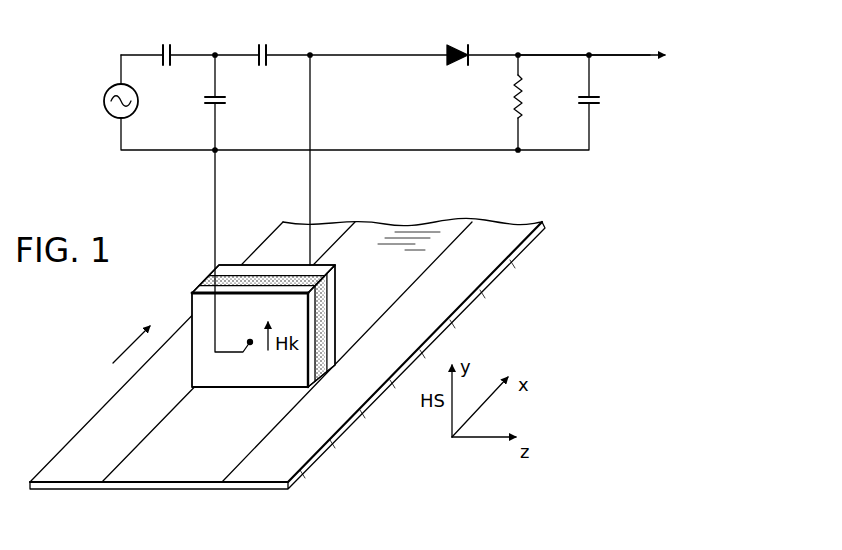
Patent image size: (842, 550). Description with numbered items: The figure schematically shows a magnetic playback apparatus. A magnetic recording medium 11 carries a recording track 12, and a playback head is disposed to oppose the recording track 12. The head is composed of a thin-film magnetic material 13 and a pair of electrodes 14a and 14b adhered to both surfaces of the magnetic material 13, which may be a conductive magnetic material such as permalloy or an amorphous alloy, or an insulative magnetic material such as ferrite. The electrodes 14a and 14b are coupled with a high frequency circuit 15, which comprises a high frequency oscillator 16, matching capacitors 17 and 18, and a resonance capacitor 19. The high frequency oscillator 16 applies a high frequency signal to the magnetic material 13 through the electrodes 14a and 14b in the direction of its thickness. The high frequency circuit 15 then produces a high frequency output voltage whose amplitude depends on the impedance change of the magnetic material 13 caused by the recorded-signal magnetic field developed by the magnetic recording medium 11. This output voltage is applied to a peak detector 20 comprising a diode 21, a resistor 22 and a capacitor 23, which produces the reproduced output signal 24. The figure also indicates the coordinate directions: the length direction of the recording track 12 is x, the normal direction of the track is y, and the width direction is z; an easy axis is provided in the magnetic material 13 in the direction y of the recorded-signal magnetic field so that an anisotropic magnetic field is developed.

The magnetic recording medium 11 is at (323, 445).
The recording track 12 is at (145, 483).
The thin-film magnetic material 13 is at (228, 278).
The electrode 14a is at (233, 382).
The electrode 14b is at (338, 283).
The high frequency circuit 15 is at (281, 74).
The high frequency oscillator 16 is at (103, 101).
The matching capacitor 17 is at (167, 43).
The matching capacitor 18 is at (264, 43).
The resonance capacitor 19 is at (227, 100).
The peak detector 20 is at (548, 68).
The diode 21 is at (459, 44).
The resistor 22 is at (512, 99).
The capacitor 23 is at (604, 100).
The reproduced output signal 24 is at (624, 55).